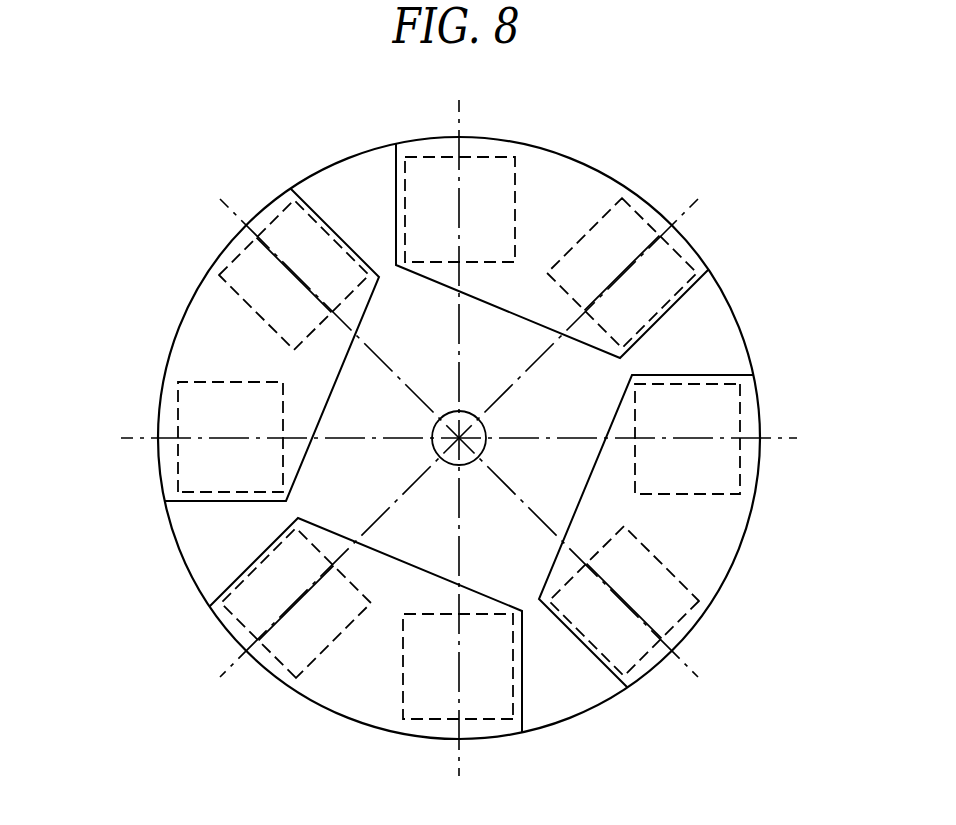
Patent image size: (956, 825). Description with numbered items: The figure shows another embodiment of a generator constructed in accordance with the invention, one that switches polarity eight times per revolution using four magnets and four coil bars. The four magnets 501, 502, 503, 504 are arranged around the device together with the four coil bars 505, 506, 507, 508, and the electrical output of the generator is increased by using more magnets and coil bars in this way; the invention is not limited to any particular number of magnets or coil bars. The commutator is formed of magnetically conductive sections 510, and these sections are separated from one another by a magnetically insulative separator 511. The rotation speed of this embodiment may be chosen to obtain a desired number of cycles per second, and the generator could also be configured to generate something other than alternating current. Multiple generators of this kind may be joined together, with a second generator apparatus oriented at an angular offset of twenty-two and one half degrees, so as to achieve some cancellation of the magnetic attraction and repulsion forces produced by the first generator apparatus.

The magnet 501 is at (515, 183).
The magnet 502 is at (228, 493).
The magnet 503 is at (515, 678).
The magnet 504 is at (695, 493).
The coil bar 505 is at (595, 223).
The coil bar 506 is at (250, 305).
The coil bar 507 is at (330, 643).
The coil bar 508 is at (662, 563).
The commutator magnetically conductive section 510 is at (613, 362).
The magnetically insulative separator 511 is at (343, 157).